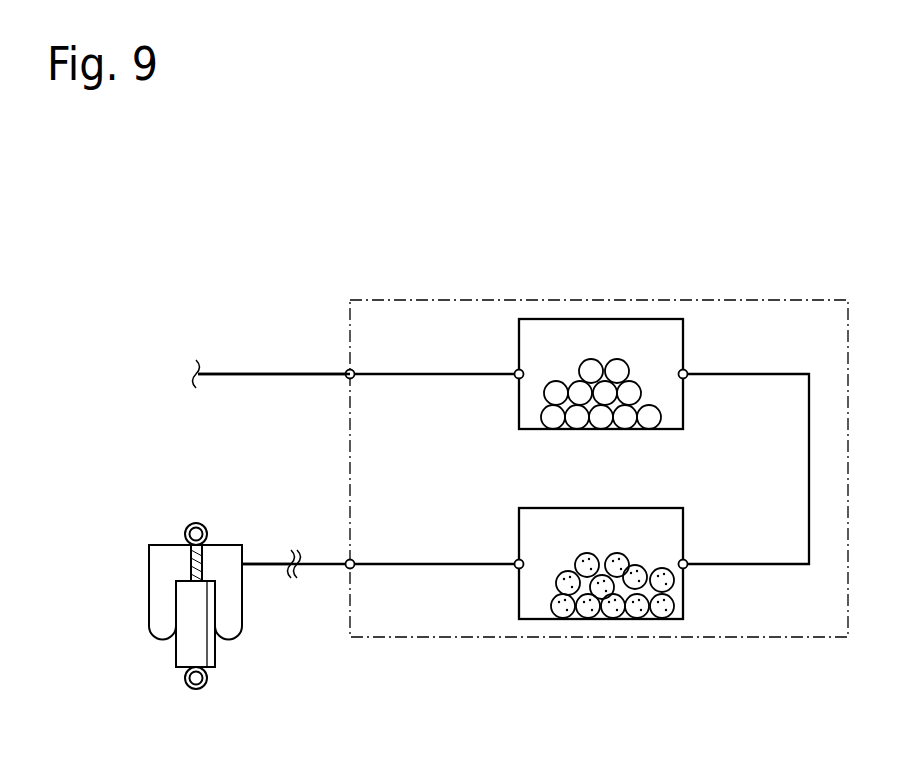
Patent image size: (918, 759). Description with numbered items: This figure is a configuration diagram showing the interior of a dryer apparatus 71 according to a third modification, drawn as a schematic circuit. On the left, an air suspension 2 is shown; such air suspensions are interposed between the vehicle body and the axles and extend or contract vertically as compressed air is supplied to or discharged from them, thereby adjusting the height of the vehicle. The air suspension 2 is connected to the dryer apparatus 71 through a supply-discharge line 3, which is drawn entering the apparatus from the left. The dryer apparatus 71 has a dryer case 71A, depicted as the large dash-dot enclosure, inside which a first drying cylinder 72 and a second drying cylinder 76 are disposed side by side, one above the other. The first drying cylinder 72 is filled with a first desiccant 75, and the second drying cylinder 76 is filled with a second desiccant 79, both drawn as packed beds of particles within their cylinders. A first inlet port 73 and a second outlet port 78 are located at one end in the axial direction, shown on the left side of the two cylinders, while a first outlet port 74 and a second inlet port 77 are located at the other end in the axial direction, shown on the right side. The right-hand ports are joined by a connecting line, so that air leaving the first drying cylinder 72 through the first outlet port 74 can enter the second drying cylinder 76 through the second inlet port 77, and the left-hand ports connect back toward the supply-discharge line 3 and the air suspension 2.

The air suspension 2 is at (222, 568).
The supply-discharge line 3 is at (247, 374).
The dryer apparatus 71 is at (529, 290).
The dryer case 71A is at (765, 300).
The first drying cylinder 72 is at (582, 319).
The first inlet port 73 is at (517, 372).
The first outlet port 74 is at (685, 372).
The first desiccant 75 is at (617, 370).
The second drying cylinder 76 is at (548, 619).
The second inlet port 77 is at (685, 567).
The second outlet port 78 is at (517, 567).
The second desiccant 79 is at (616, 619).